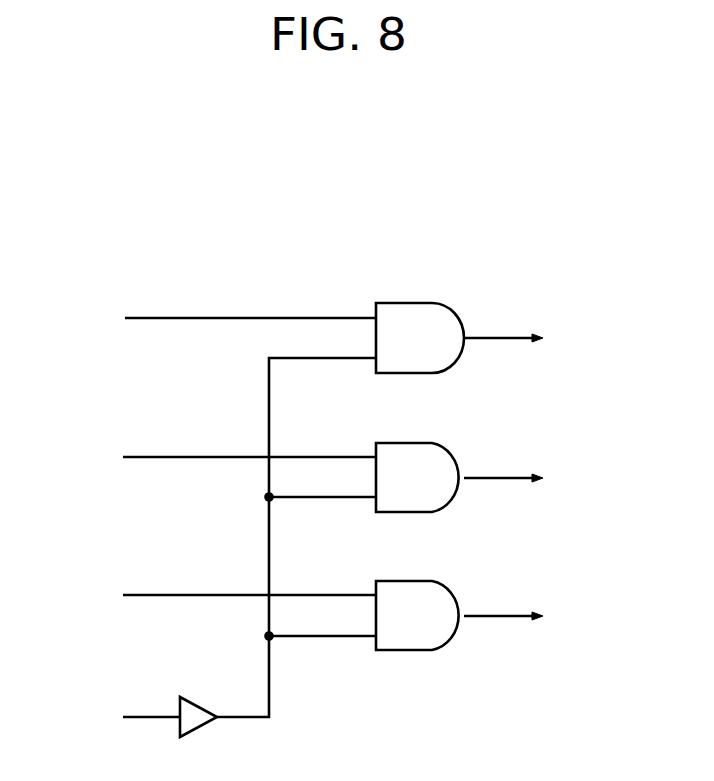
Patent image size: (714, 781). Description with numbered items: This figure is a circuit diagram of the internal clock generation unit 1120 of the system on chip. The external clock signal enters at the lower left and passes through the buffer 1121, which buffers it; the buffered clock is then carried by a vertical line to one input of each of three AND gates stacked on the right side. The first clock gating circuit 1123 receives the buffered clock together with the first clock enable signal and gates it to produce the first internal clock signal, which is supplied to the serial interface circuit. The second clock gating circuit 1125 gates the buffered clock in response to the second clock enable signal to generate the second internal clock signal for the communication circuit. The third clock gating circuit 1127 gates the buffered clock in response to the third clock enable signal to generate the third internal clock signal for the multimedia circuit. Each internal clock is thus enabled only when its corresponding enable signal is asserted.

The internal clock generation unit 1120 is at (323, 201).
The buffer 1121 is at (205, 697).
The first clock gating circuit 1123 is at (410, 303).
The second clock gating circuit 1125 is at (410, 443).
The third clock gating circuit 1127 is at (410, 581).